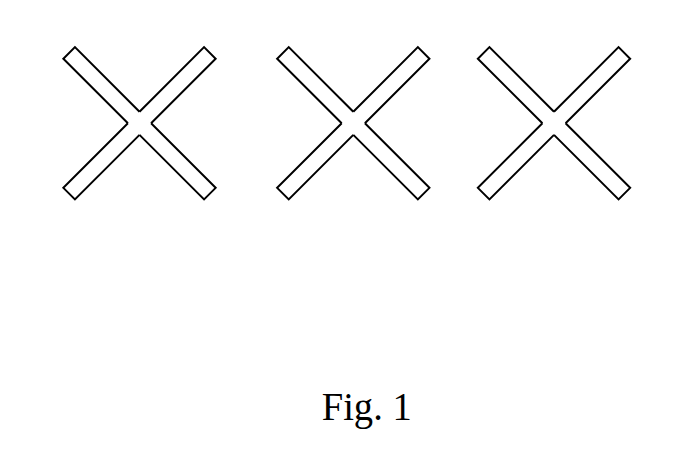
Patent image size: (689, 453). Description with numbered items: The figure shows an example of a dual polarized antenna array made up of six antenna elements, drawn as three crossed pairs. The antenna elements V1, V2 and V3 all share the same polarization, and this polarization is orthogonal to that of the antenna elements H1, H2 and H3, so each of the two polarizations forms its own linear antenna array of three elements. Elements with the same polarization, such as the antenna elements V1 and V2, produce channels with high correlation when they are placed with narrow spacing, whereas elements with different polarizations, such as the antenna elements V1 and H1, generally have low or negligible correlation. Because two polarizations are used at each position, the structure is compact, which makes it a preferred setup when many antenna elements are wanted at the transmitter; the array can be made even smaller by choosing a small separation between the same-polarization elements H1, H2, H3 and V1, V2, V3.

The antenna element H1 is at (139, 105).
The antenna element V1 is at (126, 138).
The antenna element H2 is at (353, 105).
The antenna element V2 is at (342, 141).
The antenna element H3 is at (554, 105).
The antenna element V3 is at (547, 141).